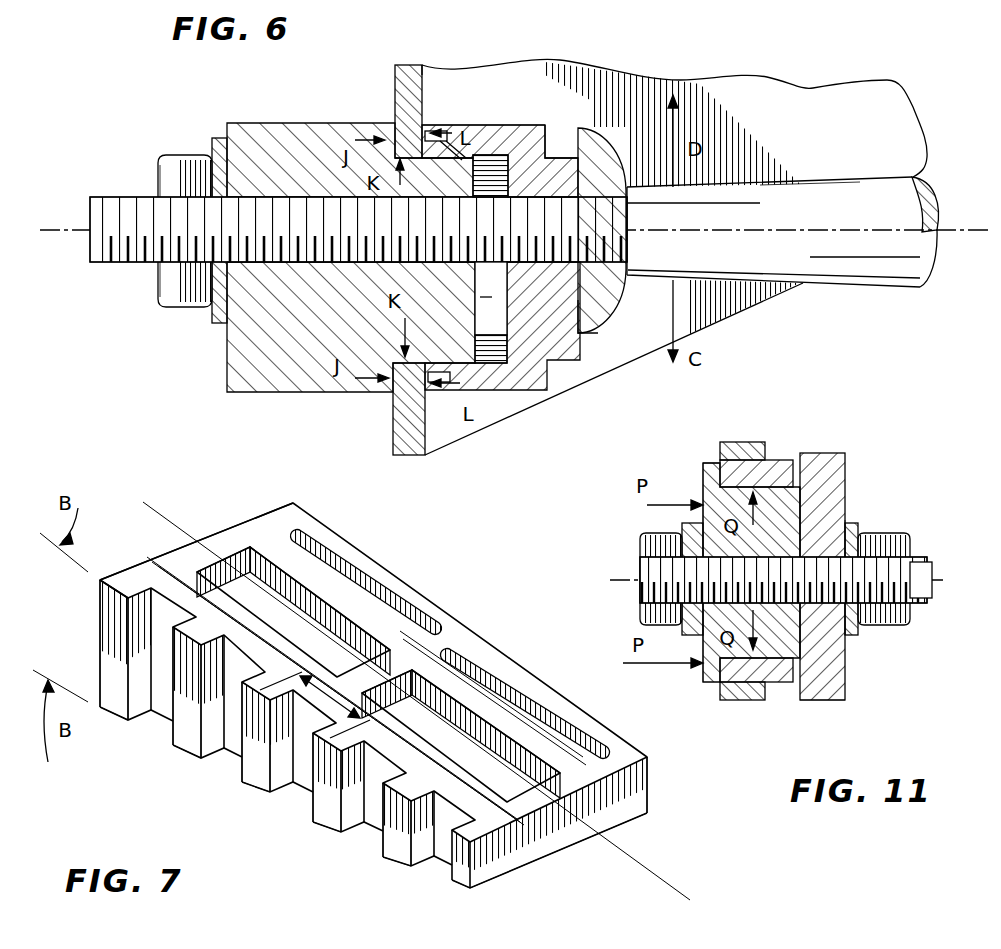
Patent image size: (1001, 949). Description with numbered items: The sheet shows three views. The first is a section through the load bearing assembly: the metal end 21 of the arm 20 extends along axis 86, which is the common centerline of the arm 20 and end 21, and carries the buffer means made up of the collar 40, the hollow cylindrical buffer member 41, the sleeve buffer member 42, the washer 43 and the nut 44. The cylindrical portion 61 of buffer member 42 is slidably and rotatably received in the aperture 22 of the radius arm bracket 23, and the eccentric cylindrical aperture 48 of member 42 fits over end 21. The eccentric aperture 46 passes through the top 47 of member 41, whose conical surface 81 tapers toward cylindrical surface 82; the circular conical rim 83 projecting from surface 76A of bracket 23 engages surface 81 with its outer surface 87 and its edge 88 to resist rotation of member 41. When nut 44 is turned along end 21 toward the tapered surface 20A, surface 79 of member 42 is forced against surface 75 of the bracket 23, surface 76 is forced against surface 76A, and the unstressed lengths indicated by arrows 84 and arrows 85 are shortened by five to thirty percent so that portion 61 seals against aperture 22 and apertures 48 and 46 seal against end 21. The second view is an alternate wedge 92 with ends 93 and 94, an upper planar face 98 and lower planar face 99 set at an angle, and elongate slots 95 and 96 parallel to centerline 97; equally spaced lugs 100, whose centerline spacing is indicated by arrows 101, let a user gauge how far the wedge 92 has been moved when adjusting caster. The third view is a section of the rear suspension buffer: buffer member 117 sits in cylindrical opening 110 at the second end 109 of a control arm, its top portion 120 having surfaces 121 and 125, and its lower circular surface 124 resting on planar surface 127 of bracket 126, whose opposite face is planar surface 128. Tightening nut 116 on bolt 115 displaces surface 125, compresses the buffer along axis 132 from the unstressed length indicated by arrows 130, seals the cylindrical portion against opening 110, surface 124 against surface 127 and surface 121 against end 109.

In FIG. 6, the arm 20 is at (848, 172).
In FIG. 6, the tapered surface 20A is at (805, 185).
In FIG. 6, the metal end 21 is at (158, 172).
In FIG. 6, the aperture 22 is at (396, 362).
In FIG. 6, the radius arm bracket 23 is at (775, 68).
In FIG. 6, the collar 40 is at (600, 155).
In FIG. 6, the hollow cylindrical buffer member 41 is at (522, 112).
In FIG. 6, the sleeve buffer member 42 is at (338, 118).
In FIG. 6, the washer 43 is at (222, 132).
In FIG. 6, the nut 44 is at (183, 150).
In FIG. 6, the eccentric aperture 46 is at (565, 184).
In FIG. 6, the top 47 is at (588, 345).
In FIG. 6, the eccentric cylindrical aperture 48 is at (362, 265).
In FIG. 6, the cylindrical portion 61 is at (473, 306).
In FIG. 6, the surface 75 is at (395, 88).
In FIG. 6, the surface 76 is at (438, 130).
In FIG. 6, the surface 76A is at (425, 70).
In FIG. 6, the surface 79 is at (362, 165).
In FIG. 6, the conical surface 81 is at (478, 150).
In FIG. 6, the cylindrical surface 82 is at (503, 355).
In FIG. 6, the circular conical rim 83 is at (456, 350).
In FIG. 6, the arrows indicating unstressed length 84 is at (507, 468).
In FIG. 6, the arrows indicating unstressed length 85 is at (577, 365).
In FIG. 6, the axis 86 is at (60, 232).
In FIG. 6, the outer surface 87 is at (450, 155).
In FIG. 6, the edge 88 is at (480, 165).
In FIG. 7, the wedge 92 is at (437, 590).
In FIG. 7, the end 93 is at (216, 540).
In FIG. 7, the end 94 is at (575, 855).
In FIG. 7, the elongate slot 95 is at (520, 705).
In FIG. 7, the elongate slot 96 is at (352, 600).
In FIG. 7, the centerline 97 is at (640, 860).
In FIG. 7, the upper planar face 98 is at (140, 577).
In FIG. 7, the lower planar face 99 is at (525, 872).
In FIG. 7, the lugs 100 is at (120, 708).
In FIG. 7, the arrows indicating lug spacing 101 is at (340, 690).
In FIG. 11, the second end 109 is at (770, 445).
In FIG. 11, the cylindrical opening 110 is at (738, 470).
In FIG. 11, the bolt 115 is at (636, 590).
In FIG. 11, the nut 116 is at (918, 538).
In FIG. 11, the buffer member 117 is at (713, 452).
In FIG. 11, the second cylindrical top portion 120 is at (700, 470).
In FIG. 11, the surface 121 is at (720, 670).
In FIG. 11, the lower circular surface 124 is at (845, 518).
In FIG. 11, the surface 125 is at (702, 480).
In FIG. 11, the bracket 126 is at (842, 448).
In FIG. 11, the planar surface 127 is at (805, 480).
In FIG. 11, the planar surface 128 is at (848, 680).
In FIG. 11, the arrows indicating unstressed length 130 is at (703, 690).
In FIG. 11, the axis 132 is at (928, 605).